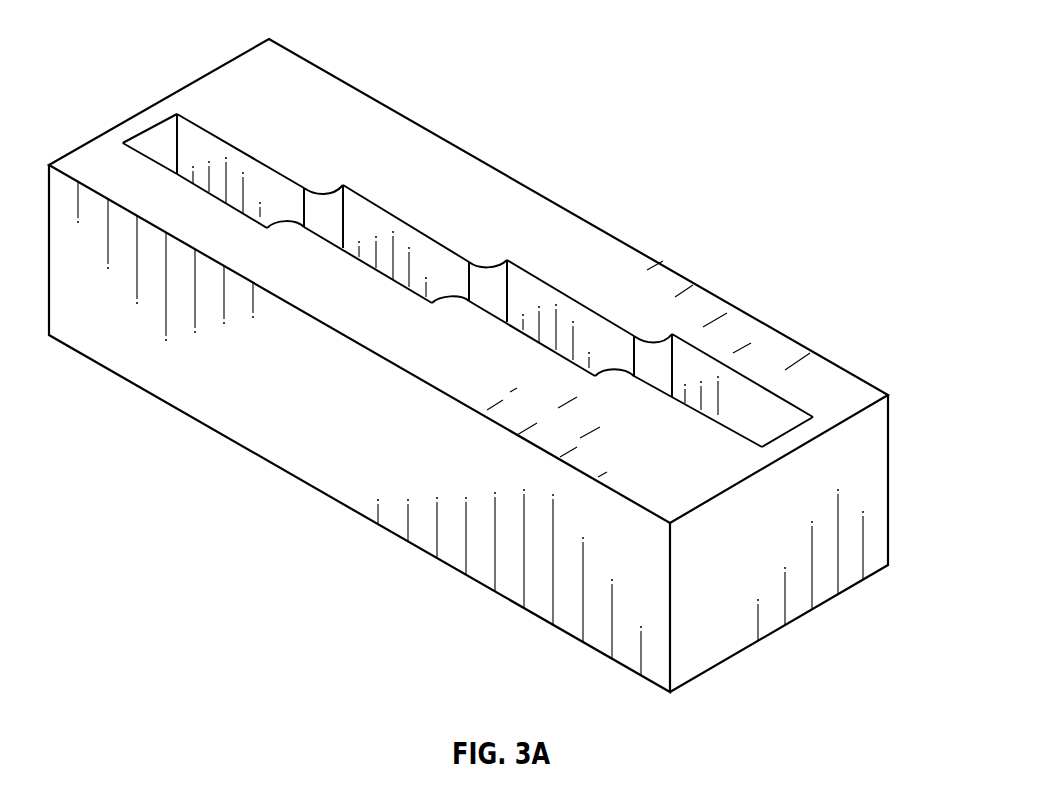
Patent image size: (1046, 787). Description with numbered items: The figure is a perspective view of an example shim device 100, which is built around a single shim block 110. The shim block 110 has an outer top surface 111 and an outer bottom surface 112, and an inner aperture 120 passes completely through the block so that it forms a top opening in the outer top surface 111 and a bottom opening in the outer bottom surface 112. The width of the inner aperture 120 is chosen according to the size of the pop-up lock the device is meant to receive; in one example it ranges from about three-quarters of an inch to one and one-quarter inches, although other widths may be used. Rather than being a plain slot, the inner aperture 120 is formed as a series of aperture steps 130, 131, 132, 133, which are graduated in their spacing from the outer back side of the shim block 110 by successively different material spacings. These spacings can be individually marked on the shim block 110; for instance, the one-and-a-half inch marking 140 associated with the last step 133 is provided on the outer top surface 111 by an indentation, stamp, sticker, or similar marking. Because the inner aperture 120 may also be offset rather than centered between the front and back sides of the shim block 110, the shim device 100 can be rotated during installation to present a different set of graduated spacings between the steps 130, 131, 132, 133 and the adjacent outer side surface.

The shim device 100 is at (468, 349).
The shim block 110 is at (378, 117).
The outer top surface 111 is at (247, 75).
The outer bottom surface 112 is at (785, 620).
The inner aperture 120 is at (465, 259).
The aperture step 130 is at (257, 173).
The aperture step 131 is at (377, 218).
The aperture step 132 is at (540, 306).
The aperture step 133 is at (710, 372).
The 1.50 inch marking 140 is at (632, 458).